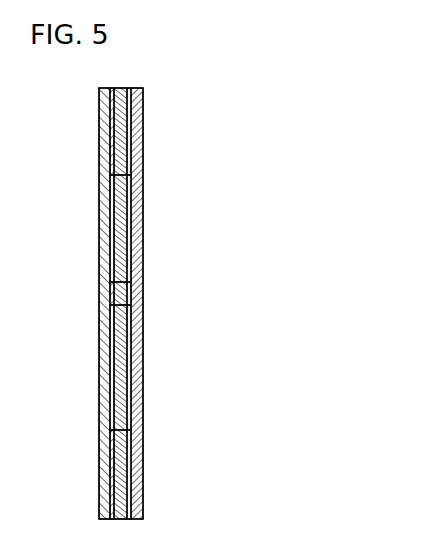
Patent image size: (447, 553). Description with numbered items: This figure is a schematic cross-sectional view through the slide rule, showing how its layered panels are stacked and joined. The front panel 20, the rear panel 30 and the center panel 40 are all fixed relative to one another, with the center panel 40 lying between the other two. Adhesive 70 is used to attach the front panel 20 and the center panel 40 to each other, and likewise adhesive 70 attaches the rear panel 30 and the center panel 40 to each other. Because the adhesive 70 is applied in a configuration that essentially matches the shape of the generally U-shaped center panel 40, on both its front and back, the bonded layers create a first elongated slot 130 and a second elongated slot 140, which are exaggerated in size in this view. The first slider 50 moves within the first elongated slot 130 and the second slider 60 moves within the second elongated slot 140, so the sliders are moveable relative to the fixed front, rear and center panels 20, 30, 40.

The front panel 20 is at (99, 128).
The rear panel 30 is at (143, 150).
The center panel 40 is at (118, 121).
The first slider 50 is at (120, 213).
The second slider 60 is at (120, 358).
The adhesive 70 is at (113, 88).
The first elongated slot 130 is at (110, 214).
The second elongated slot 140 is at (110, 376).